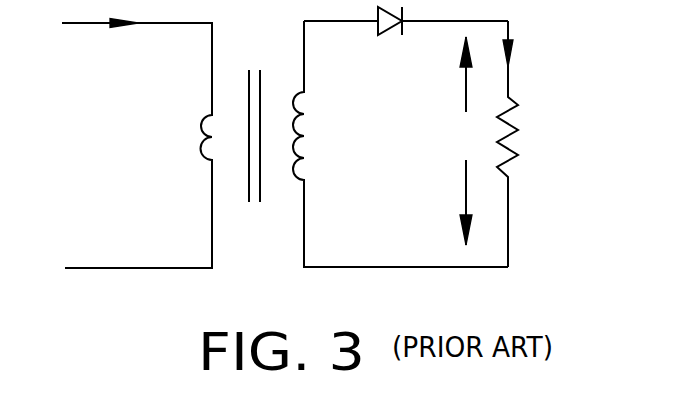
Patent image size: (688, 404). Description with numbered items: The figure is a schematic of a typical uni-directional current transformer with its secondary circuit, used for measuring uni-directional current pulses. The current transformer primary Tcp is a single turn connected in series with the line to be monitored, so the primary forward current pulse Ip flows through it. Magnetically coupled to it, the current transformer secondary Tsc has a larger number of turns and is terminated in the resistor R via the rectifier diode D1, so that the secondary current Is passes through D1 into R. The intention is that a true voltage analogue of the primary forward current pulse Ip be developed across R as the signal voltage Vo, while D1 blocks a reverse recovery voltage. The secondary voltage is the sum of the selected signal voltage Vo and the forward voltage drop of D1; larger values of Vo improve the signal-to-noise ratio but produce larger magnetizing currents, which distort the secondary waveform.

The primary forward current pulse Ip is at (124, 38).
The current transformer primary Tcp is at (200, 127).
The current transformer secondary Tsc is at (300, 127).
The rectifier diode D1 is at (406, 36).
The secondary current Is is at (520, 53).
The signal voltage Vo is at (467, 141).
The resistor R is at (520, 144).